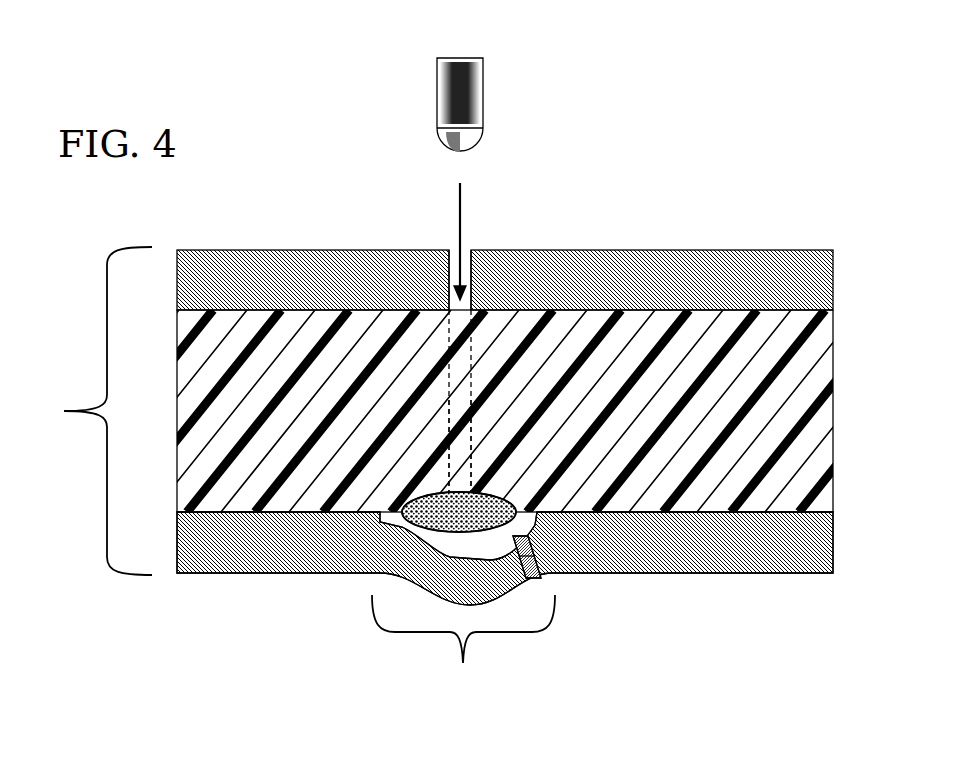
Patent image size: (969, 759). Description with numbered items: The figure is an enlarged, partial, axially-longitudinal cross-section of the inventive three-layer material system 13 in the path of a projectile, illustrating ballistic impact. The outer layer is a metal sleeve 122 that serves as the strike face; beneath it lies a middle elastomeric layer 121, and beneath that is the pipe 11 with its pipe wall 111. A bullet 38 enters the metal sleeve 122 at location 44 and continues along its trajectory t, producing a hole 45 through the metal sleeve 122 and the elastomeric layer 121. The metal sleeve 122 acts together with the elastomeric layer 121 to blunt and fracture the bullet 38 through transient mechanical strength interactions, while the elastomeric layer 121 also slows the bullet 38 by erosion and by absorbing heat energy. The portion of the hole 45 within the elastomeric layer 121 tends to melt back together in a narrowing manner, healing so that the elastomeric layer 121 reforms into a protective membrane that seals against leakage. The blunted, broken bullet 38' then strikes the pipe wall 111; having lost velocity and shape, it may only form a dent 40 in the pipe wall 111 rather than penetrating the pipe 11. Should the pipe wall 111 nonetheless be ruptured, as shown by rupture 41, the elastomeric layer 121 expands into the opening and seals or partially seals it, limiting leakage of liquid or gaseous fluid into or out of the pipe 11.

The three-layer material system 13 is at (87, 411).
The metal sleeve 122 is at (677, 272).
The elastomeric layer 121 is at (732, 407).
The location 44 is at (450, 248).
The bullet 38 is at (505, 168).
The pipe 11 is at (738, 552).
The pipe wall 111 is at (738, 552).
The rupture 41 is at (530, 556).
The blunted/broken bullet 38' is at (338, 572).
The hole 45 is at (457, 417).
The dent 40 is at (463, 651).